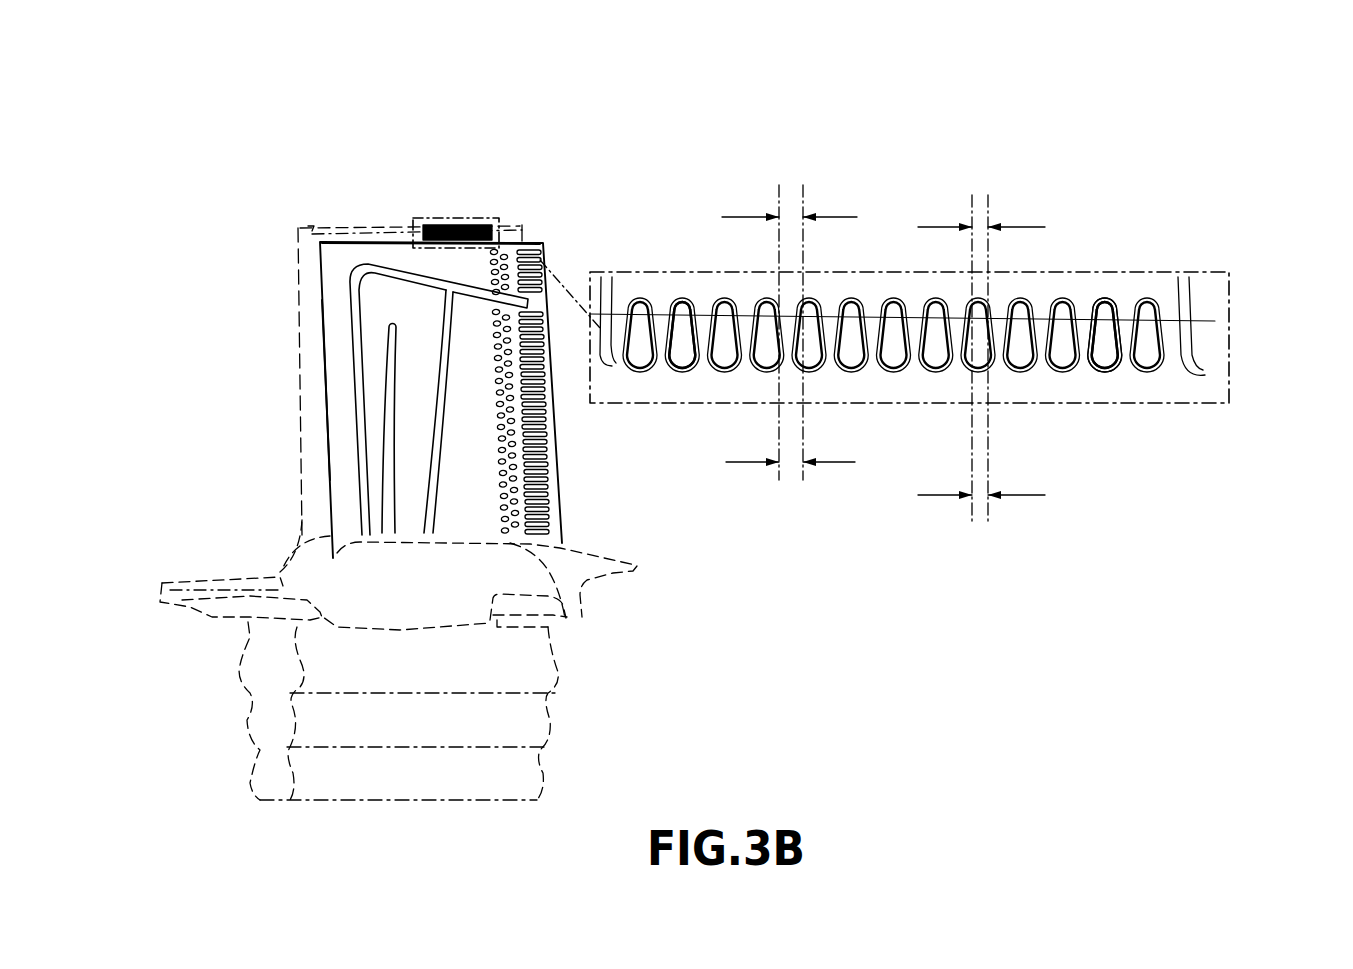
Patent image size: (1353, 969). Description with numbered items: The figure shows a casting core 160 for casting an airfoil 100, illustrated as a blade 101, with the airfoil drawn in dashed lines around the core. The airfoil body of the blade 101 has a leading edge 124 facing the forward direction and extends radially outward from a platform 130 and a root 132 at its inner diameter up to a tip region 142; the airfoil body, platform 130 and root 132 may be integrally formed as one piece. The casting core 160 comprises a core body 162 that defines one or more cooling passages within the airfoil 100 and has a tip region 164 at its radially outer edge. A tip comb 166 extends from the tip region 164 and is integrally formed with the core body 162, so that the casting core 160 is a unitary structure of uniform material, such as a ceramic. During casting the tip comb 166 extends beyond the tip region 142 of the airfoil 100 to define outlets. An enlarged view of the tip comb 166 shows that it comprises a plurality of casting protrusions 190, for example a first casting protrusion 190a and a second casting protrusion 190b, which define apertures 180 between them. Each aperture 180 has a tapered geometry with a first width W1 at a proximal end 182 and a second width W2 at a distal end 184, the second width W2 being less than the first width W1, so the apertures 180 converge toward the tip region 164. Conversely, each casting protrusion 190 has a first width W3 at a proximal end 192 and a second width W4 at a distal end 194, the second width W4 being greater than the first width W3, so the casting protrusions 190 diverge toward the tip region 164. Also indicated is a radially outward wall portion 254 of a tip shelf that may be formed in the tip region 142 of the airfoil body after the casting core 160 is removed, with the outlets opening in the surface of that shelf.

The airfoil 100 is at (186, 178).
The blade 101 is at (346, 220).
The casting core 160 is at (310, 276).
The core body 162 is at (327, 388).
The leading edge 124 is at (300, 440).
The platform 130 is at (255, 565).
The root 132 is at (263, 712).
The tip region 164 is at (377, 240).
The tip comb 166 is at (508, 205).
The tip region 142 is at (523, 230).
The casting protrusions 190 is at (1192, 133).
The first casting protrusion 190a is at (1085, 330).
The second casting protrusion 190b is at (1128, 330).
The distal end 194 is at (662, 303).
The proximal end 192 is at (672, 333).
The distal end 184 is at (1047, 297).
The proximal end 182 is at (1097, 365).
The aperture 180 is at (1108, 360).
The radially outward wall portion 254 is at (1216, 318).
The first width W1 is at (1040, 495).
The second width W2 is at (1035, 227).
The first width W3 is at (753, 462).
The second width W4 is at (850, 217).